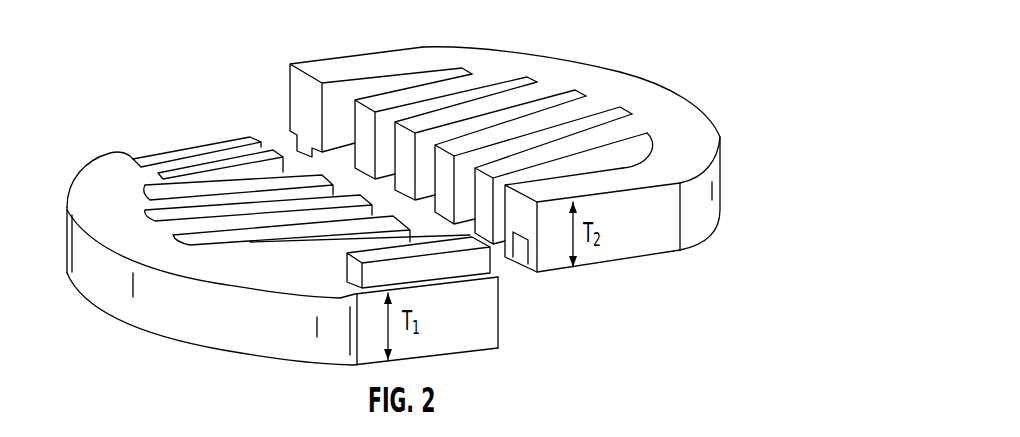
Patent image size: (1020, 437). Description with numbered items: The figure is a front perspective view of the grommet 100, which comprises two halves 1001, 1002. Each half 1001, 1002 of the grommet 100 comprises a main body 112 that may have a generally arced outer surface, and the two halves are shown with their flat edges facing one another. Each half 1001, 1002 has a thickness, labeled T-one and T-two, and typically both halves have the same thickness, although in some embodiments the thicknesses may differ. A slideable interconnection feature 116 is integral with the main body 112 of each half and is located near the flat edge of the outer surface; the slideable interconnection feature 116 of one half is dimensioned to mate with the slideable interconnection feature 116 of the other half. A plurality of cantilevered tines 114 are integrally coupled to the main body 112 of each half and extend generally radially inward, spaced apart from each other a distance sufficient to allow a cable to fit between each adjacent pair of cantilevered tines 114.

The grommet 100 is at (164, 56).
The first half of the grommet 1001 is at (282, 237).
The second half of the grommet 1002 is at (505, 142).
The main body 112 is at (688, 120).
The cantilevered tine 114 is at (513, 98).
The slideable interconnection feature 116 is at (305, 147).